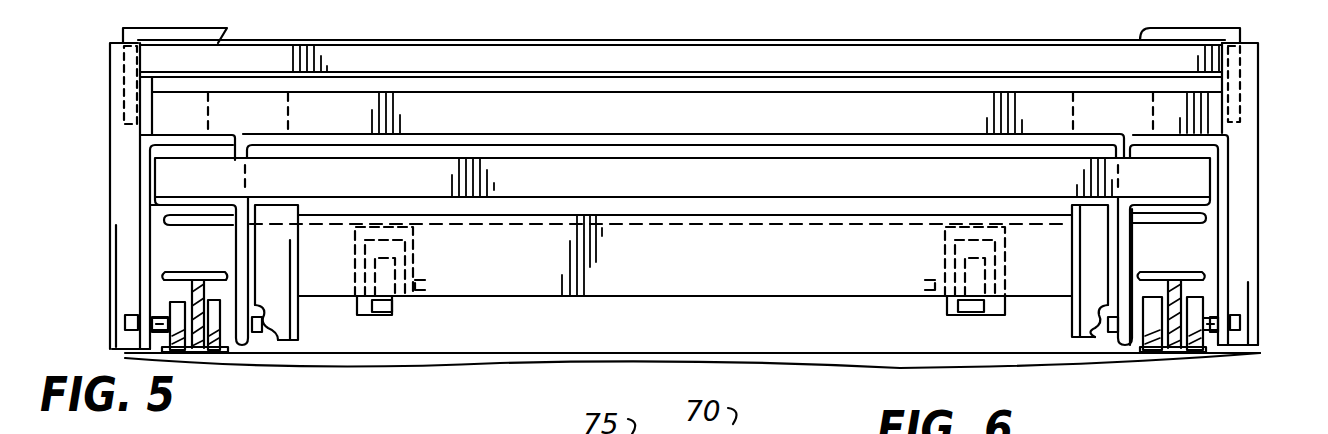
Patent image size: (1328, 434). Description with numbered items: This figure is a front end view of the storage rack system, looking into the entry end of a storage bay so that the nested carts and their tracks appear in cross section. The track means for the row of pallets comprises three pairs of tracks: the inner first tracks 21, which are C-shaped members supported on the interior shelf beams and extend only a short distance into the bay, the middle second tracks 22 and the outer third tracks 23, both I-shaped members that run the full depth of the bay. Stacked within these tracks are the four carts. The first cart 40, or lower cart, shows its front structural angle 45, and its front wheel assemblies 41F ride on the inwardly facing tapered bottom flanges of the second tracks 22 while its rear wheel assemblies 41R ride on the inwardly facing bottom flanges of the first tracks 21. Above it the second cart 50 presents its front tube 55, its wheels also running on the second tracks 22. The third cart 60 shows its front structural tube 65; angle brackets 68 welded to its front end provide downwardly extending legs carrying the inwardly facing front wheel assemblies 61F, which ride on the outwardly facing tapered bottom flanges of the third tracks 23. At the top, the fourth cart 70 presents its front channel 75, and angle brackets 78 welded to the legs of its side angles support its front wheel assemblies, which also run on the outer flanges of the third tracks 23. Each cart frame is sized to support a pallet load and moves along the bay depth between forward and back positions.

The third cart 60 is at (540, 110).
The fourth cart 70 is at (772, 17).
The front channel 75 is at (908, 50).
The front structural tube 65 is at (823, 122).
The front tube 55 is at (848, 185).
The second cart 50 is at (704, 180).
The front structural angle 45 is at (847, 259).
The first cart 40 is at (728, 281).
The rear wheel assembly 41R is at (387, 302).
The front wheel assembly 41F is at (232, 348).
The first tracks 21 is at (378, 317).
The second tracks 22 is at (217, 349).
The third tracks 23 is at (187, 349).
The front wheel assembly 61F is at (177, 311).
The angle brackets 68 is at (145, 254).
The angle brackets 78 is at (118, 153).